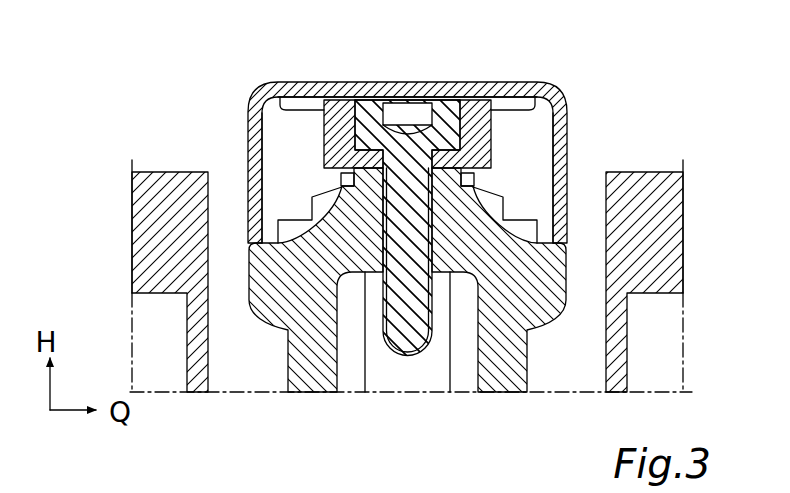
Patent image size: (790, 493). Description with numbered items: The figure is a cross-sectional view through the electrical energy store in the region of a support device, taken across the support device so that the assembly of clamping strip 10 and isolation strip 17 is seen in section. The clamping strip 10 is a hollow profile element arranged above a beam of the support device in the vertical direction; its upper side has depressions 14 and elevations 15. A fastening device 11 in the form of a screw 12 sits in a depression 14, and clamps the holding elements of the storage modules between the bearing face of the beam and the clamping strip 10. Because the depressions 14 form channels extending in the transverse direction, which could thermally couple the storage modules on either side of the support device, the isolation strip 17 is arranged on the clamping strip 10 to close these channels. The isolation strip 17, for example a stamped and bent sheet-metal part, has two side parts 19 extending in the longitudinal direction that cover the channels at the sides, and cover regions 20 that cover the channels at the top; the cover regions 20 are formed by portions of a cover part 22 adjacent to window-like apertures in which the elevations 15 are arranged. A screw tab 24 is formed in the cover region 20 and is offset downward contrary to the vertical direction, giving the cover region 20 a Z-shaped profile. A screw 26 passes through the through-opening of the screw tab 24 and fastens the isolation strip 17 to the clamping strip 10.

The clamping strip 10 is at (510, 371).
The fastening device 11 is at (514, 185).
The screw 12 is at (402, 374).
The depression 14 is at (276, 240).
The elevation 15 is at (517, 98).
The isolation strip 17 is at (243, 143).
The side part 19 is at (245, 127).
The cover region 20 is at (392, 177).
The cover part 22 is at (322, 80).
The screw tab 24 is at (341, 112).
The screw 26 is at (408, 192).